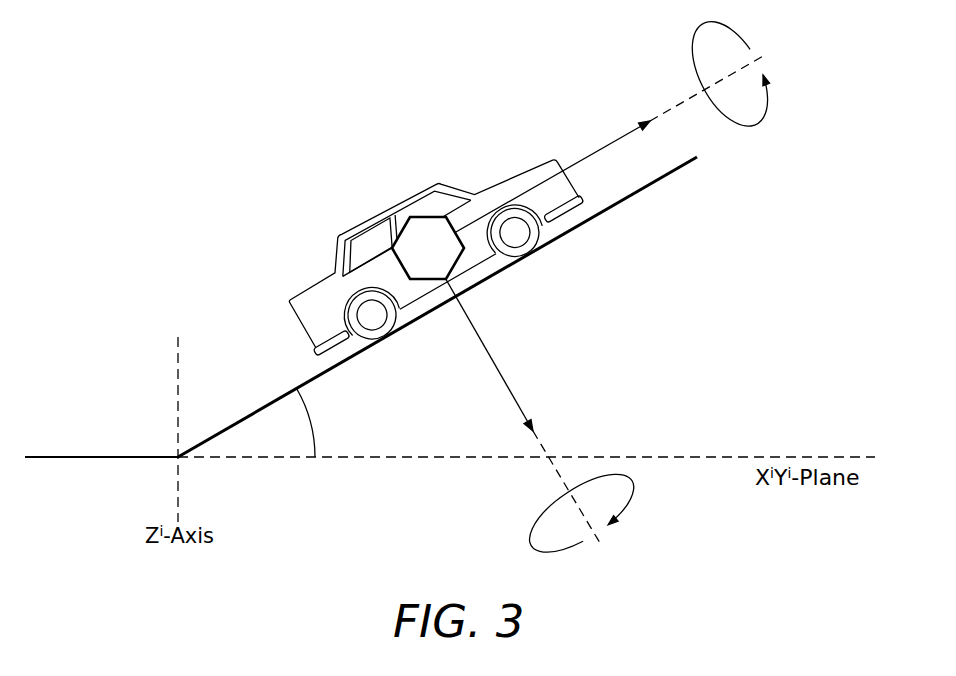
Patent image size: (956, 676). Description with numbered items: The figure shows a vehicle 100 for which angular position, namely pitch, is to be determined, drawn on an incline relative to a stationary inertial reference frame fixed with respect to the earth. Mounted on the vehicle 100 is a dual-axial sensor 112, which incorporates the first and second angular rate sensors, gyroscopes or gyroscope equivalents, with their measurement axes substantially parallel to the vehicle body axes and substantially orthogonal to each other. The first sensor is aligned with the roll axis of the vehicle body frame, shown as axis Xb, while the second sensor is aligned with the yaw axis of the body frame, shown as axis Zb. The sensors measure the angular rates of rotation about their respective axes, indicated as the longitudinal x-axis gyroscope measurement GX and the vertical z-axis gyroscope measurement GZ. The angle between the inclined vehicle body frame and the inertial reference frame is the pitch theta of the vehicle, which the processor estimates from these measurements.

The vehicle 100 is at (311, 292).
The dual-axial sensor 112 is at (478, 265).
The vehicle body frame x-axis Xb is at (610, 142).
The vehicle body frame z-axis Zb is at (523, 411).
The x-axis gyroscope measurement GX is at (733, 84).
The z-axis gyroscope measurement GZ is at (593, 514).
The pitch theta is at (315, 423).